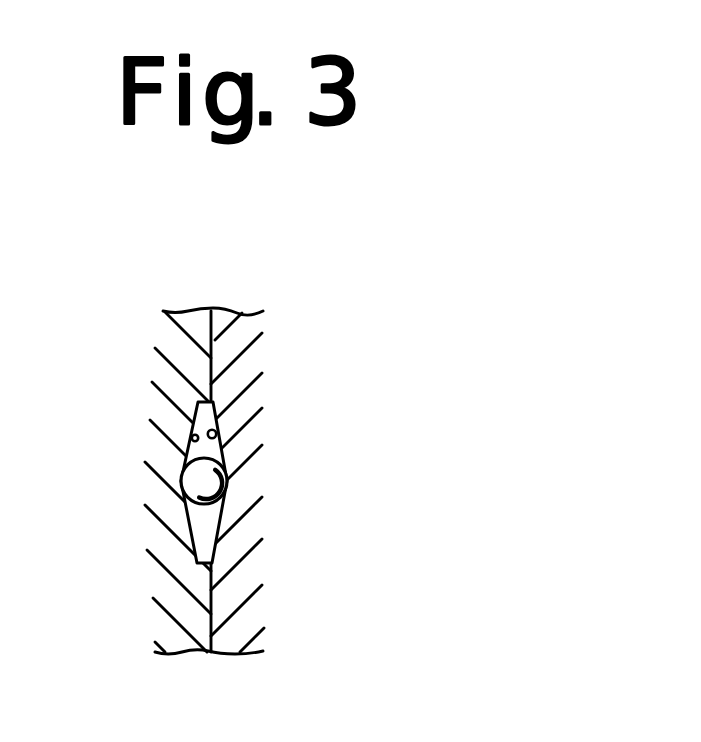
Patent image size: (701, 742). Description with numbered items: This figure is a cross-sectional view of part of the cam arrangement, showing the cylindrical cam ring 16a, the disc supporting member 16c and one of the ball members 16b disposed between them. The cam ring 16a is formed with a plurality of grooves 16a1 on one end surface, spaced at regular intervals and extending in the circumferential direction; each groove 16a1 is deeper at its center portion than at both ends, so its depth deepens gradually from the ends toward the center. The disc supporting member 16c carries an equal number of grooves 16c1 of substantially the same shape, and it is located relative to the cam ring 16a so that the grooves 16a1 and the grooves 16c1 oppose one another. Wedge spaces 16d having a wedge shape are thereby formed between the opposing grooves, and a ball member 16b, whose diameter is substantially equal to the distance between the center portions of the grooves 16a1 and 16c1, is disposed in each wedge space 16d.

The cam ring 16a is at (8, 310).
The grooves 16a1 is at (15, 424).
The ball members 16b is at (360, 452).
The disc supporting member 16c is at (359, 319).
The grooves 16c1 is at (359, 374).
The wedge spaces 16d is at (360, 539).